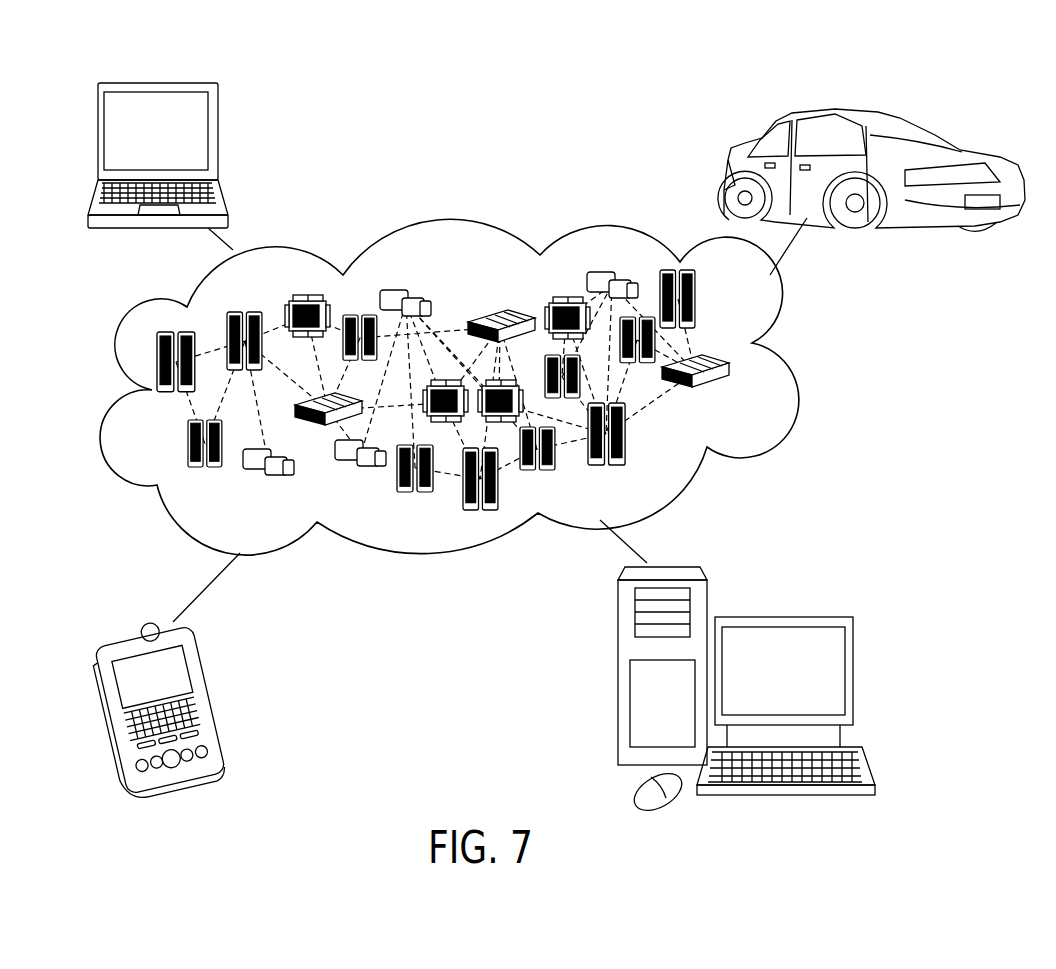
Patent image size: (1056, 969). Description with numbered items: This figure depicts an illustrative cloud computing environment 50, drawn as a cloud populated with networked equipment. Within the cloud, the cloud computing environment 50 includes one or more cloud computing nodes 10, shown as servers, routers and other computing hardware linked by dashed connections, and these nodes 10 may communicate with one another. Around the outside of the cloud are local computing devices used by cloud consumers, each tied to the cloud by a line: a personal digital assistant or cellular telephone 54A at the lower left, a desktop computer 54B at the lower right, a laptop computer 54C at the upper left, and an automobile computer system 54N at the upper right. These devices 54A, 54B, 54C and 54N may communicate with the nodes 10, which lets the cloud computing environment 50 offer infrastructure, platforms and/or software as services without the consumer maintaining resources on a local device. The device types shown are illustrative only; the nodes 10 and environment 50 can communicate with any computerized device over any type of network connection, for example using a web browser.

The cloud computing node 10 is at (752, 402).
The cloud computing environment 50 is at (800, 380).
The personal digital assistant or cellular telephone 54A is at (205, 692).
The desktop computer 54B is at (813, 617).
The laptop computer 54C is at (218, 150).
The automobile computer system 54N is at (933, 130).